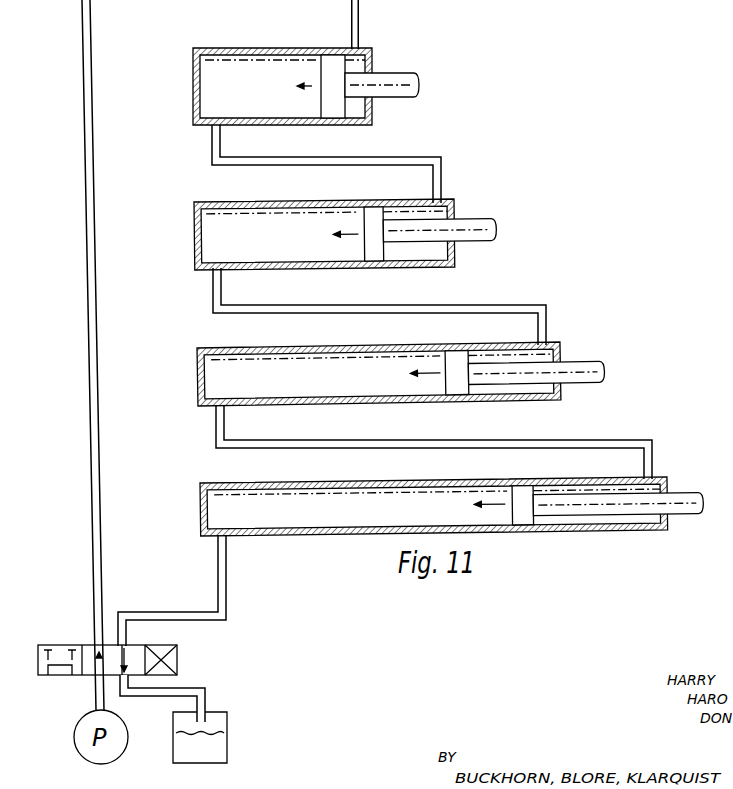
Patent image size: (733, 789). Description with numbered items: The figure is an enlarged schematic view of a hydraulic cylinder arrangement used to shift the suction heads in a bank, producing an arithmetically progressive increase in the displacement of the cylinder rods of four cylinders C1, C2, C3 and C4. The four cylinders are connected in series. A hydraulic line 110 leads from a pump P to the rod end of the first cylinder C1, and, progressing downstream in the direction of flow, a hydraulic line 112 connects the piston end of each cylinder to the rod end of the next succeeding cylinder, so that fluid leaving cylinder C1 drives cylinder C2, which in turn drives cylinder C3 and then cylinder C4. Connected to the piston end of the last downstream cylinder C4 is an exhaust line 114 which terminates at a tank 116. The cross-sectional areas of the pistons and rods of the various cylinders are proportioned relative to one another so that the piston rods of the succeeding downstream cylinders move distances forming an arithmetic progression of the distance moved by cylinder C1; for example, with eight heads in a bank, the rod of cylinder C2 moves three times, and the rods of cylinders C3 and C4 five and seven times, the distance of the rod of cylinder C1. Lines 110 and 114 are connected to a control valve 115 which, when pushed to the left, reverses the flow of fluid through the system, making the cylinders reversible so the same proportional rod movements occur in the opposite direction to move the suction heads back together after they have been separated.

The hydraulic line 110 is at (91, 353).
The hydraulic line 112 is at (285, 157).
The exhaust line 114 is at (228, 552).
The control valve 115 is at (179, 645).
The tank 116 is at (226, 712).
The cylinder C1 is at (252, 48).
The cylinder C2 is at (213, 202).
The cylinder C3 is at (219, 348).
The cylinder C4 is at (225, 483).